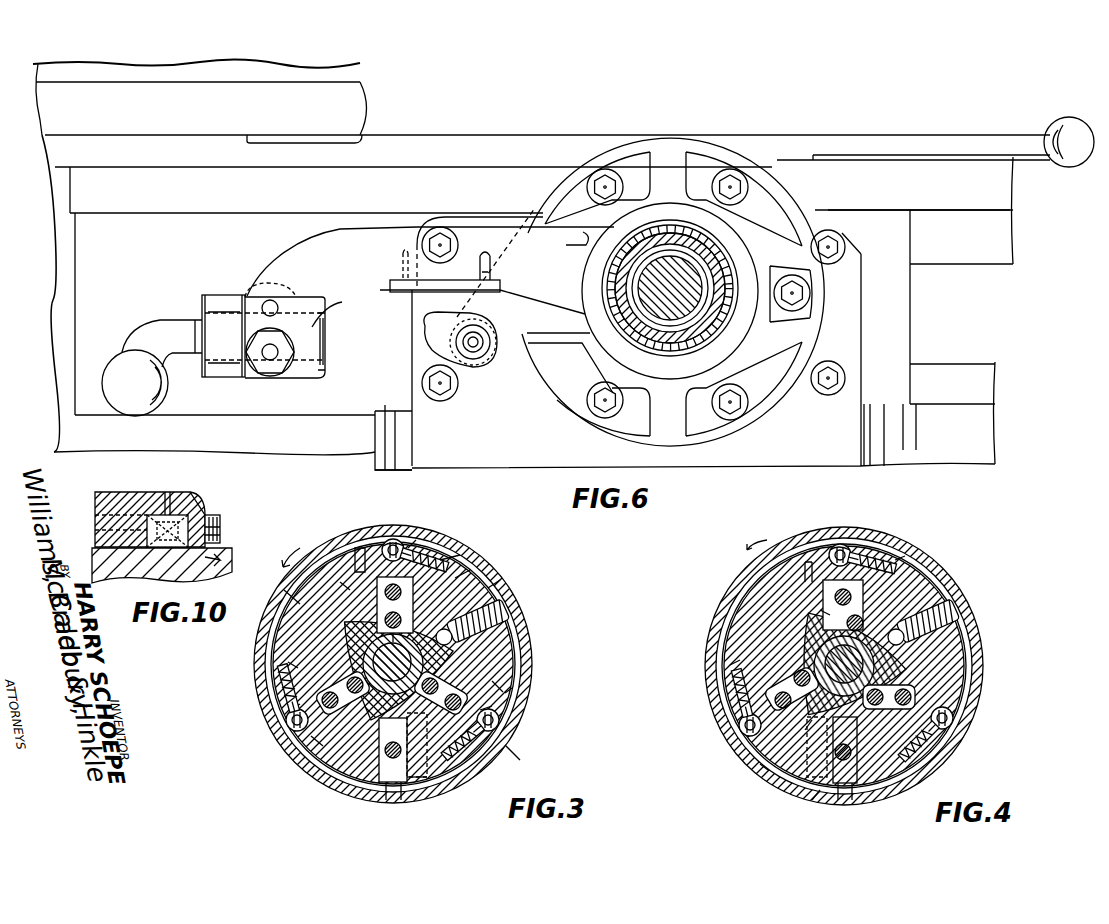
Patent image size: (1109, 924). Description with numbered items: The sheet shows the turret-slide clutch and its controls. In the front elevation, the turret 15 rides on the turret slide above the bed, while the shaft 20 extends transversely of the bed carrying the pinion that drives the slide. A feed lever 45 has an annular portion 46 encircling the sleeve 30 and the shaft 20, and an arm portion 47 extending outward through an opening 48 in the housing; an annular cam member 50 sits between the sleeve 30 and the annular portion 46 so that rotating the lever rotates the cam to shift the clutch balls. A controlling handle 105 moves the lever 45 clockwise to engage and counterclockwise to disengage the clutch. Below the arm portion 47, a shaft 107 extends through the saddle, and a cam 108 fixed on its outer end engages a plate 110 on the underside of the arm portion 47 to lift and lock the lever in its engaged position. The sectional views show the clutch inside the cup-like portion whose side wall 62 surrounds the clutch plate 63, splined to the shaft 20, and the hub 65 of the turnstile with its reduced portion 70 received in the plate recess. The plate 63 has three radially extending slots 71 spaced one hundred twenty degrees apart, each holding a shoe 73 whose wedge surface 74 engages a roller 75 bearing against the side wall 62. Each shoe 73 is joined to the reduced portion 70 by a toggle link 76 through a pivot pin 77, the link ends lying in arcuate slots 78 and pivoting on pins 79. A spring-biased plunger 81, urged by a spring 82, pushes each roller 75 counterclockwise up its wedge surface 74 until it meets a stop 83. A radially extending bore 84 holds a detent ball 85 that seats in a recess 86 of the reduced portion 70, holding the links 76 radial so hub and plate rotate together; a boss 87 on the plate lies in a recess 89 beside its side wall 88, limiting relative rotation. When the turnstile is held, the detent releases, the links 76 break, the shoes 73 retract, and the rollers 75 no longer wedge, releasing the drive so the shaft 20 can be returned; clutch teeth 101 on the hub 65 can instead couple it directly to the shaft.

In FIG. 6, the turret 15 is at (386, 66).
In FIG. 6, the shaft 20 is at (680, 278).
In FIG. 3, the shaft 20 is at (411, 662).
In FIG. 4, the shaft 20 is at (863, 664).
In FIG. 6, the sleeve 30 is at (712, 300).
In FIG. 6, the feed lever 45 is at (547, 292).
In FIG. 6, the annular portion 46 is at (782, 322).
In FIG. 6, the arm portion 47 is at (348, 240).
In FIG. 6, the opening 48 is at (561, 243).
In FIG. 6, the annular cam member 50 is at (686, 250).
In FIG. 3, the side wall 62 is at (524, 755).
In FIG. 10, the clutch plate 63 is at (122, 492).
In FIG. 3, the clutch plate 63 is at (480, 592).
In FIG. 4, the clutch plate 63 is at (940, 600).
In FIG. 10, the hub 65 is at (222, 560).
In FIG. 3, the hub 65 is at (330, 652).
In FIG. 10, the reduced portion 70 is at (212, 514).
In FIG. 3, the reduced portion 70 is at (368, 645).
In FIG. 4, the reduced portion 70 is at (815, 645).
In FIG. 10, the radially extending slots 71 is at (95, 515).
In FIG. 3, the radially extending slots 71 is at (300, 600).
In FIG. 10, the wedge member or shoe 73 is at (156, 494).
In FIG. 3, the wedge member or shoe 73 is at (505, 720).
In FIG. 4, the wedge member or shoe 73 is at (838, 545).
In FIG. 3, the wedge surface 74 is at (415, 535).
In FIG. 3, the roller 75 is at (500, 722).
In FIG. 4, the roller 75 is at (955, 718).
In FIG. 10, the toggle link 76 is at (222, 533).
In FIG. 3, the toggle link 76 is at (446, 712).
In FIG. 4, the toggle link 76 is at (912, 688).
In FIG. 10, the pivot pin 77 is at (178, 496).
In FIG. 3, the pivot pin 77 is at (290, 736).
In FIG. 4, the pivot pin 77 is at (801, 727).
In FIG. 3, the arcuate slots 78 is at (378, 608).
In FIG. 4, the arcuate slots 78 is at (813, 604).
In FIG. 3, the pins 79 is at (340, 676).
In FIG. 4, the pins 79 is at (866, 710).
In FIG. 3, the spring-biased plunger 81 is at (470, 755).
In FIG. 4, the spring-biased plunger 81 is at (950, 740).
In FIG. 3, the springs 82 is at (470, 560).
In FIG. 4, the springs 82 is at (735, 685).
In FIG. 3, the stop 83 is at (520, 690).
In FIG. 4, the stop 83 is at (762, 768).
In FIG. 3, the radially extending bore 84 is at (470, 625).
In FIG. 3, the detent ball 85 is at (500, 590).
In FIG. 10, the recess 86 is at (220, 520).
In FIG. 3, the recess 86 is at (505, 628).
In FIG. 4, the recess 86 is at (957, 630).
In FIG. 3, the boss 87 is at (393, 795).
In FIG. 4, the boss 87 is at (845, 795).
In FIG. 3, the side wall 88 is at (412, 790).
In FIG. 4, the side wall 88 is at (925, 790).
In FIG. 4, the recess 89 is at (830, 795).
In FIG. 3, the clutch teeth 101 is at (334, 581).
In FIG. 6, the controlling handle 105 is at (162, 393).
In FIG. 6, the shaft 107 is at (478, 357).
In FIG. 6, the cam 108 is at (425, 333).
In FIG. 6, the plate 110 is at (412, 290).
In FIG. 3, the plate 110 is at (472, 579).